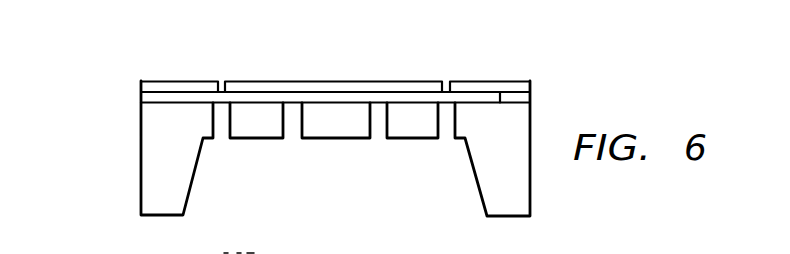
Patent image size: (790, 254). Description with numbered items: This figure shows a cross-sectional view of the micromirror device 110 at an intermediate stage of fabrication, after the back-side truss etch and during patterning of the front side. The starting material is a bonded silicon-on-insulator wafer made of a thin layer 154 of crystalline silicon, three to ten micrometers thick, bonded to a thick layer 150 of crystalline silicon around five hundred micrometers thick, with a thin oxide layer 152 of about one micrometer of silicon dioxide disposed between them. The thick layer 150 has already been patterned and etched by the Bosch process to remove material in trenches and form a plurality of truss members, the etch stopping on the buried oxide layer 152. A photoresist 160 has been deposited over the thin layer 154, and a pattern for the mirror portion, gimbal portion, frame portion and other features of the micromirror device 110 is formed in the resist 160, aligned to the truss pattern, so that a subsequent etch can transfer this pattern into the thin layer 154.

The micromirror device 110 is at (262, 70).
The thick layer 150 is at (150, 170).
The thin oxide layer 152 is at (501, 92).
The thin layer 154 is at (412, 97).
The photoresist 160 is at (173, 82).